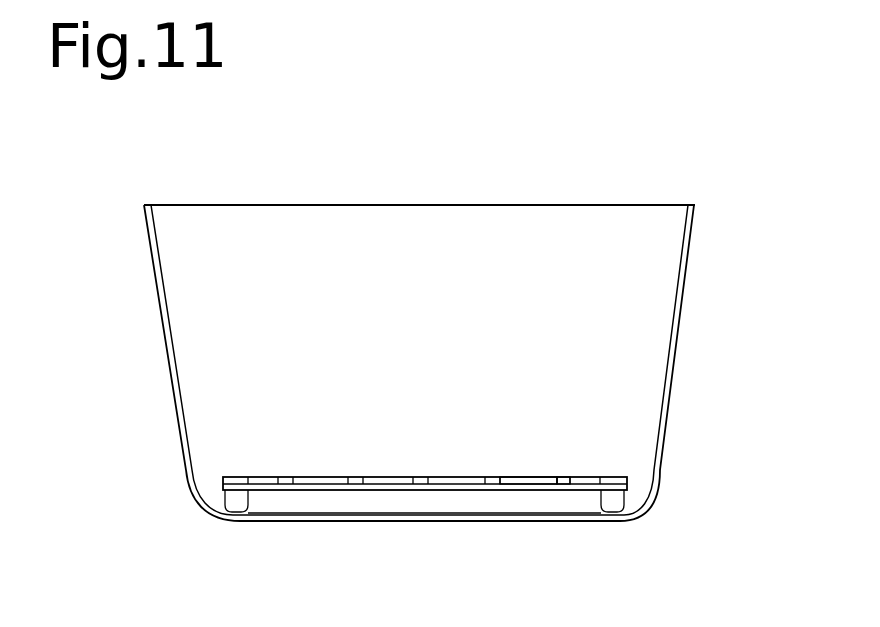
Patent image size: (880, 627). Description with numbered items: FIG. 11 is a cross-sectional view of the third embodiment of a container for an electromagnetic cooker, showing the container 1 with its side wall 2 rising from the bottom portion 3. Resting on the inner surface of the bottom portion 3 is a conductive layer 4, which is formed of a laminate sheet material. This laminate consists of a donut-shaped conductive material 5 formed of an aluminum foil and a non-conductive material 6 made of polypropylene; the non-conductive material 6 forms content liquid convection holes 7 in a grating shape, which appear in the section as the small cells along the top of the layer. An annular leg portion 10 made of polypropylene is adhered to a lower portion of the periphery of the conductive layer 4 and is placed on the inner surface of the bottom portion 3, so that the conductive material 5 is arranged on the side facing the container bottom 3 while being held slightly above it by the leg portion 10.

The container 1 is at (643, 145).
The side wall 2 is at (683, 296).
The bottom portion 3 is at (468, 519).
The conductive layer 4 is at (353, 476).
The conductive material 5 is at (392, 490).
The non-conductive material 6 is at (563, 476).
The content liquid convection holes 7 is at (530, 477).
The annular leg portion 10 is at (618, 510).